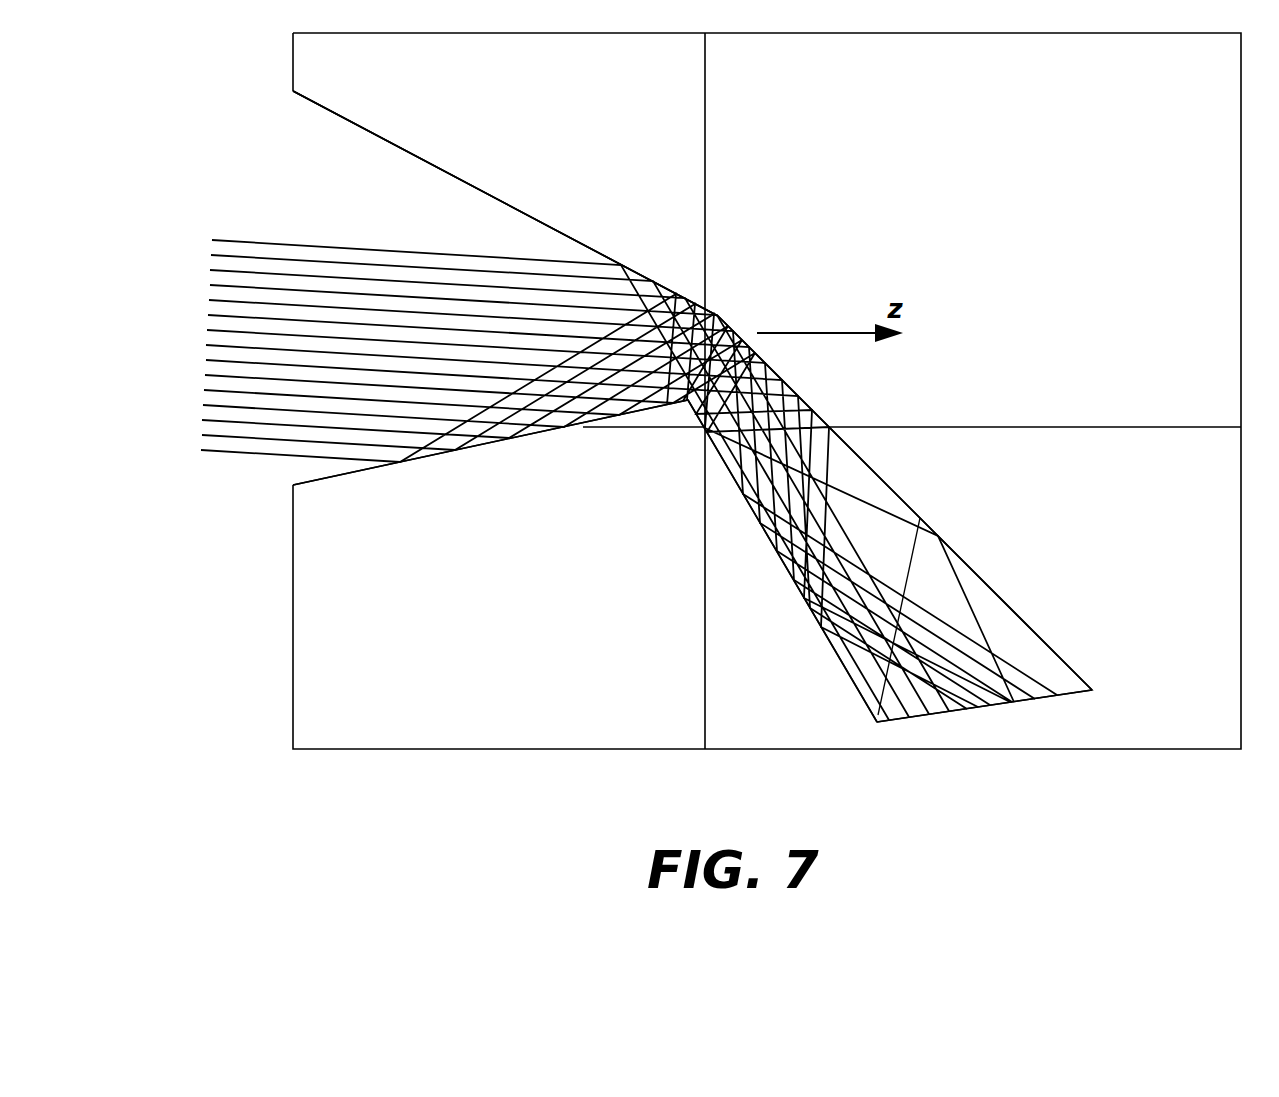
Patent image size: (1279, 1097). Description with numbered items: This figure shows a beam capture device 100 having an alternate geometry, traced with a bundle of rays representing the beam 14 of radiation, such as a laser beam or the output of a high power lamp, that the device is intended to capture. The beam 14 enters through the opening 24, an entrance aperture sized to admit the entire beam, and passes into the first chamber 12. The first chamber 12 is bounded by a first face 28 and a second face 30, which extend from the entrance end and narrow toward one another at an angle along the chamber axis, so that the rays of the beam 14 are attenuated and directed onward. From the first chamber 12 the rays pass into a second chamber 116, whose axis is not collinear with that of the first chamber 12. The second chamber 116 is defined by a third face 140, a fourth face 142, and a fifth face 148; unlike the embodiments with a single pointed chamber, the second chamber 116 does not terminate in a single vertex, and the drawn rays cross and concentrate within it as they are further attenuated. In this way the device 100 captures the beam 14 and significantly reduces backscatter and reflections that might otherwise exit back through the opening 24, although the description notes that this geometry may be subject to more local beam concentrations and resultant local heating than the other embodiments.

The device 100 is at (1207, 786).
The opening 24 is at (258, 110).
The first chamber 12 is at (306, 200).
The first face 28 is at (366, 129).
The second face 30 is at (315, 480).
The beam 14 is at (178, 292).
The second chamber 116 is at (942, 572).
The third face 140 is at (889, 498).
The fourth face 142 is at (845, 652).
The fifth face 148 is at (1058, 694).